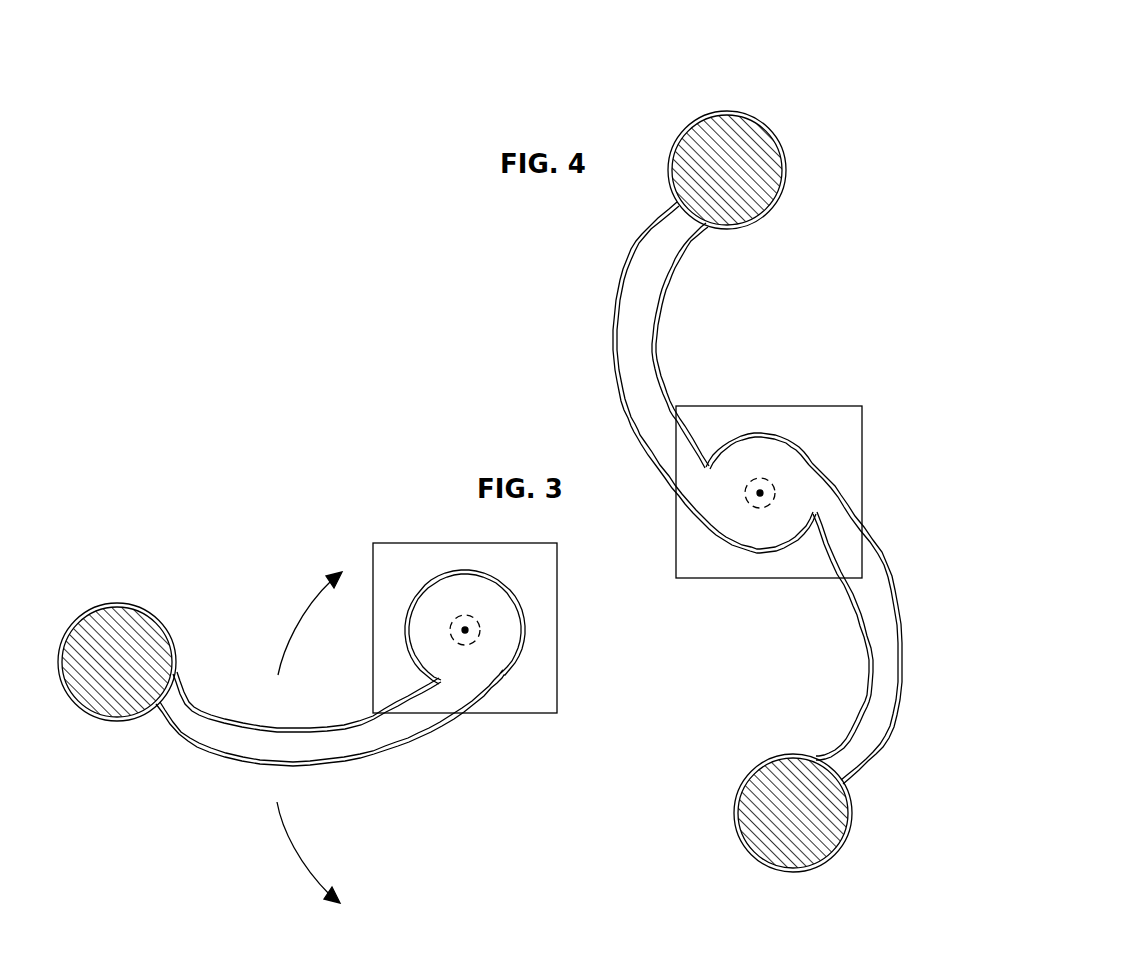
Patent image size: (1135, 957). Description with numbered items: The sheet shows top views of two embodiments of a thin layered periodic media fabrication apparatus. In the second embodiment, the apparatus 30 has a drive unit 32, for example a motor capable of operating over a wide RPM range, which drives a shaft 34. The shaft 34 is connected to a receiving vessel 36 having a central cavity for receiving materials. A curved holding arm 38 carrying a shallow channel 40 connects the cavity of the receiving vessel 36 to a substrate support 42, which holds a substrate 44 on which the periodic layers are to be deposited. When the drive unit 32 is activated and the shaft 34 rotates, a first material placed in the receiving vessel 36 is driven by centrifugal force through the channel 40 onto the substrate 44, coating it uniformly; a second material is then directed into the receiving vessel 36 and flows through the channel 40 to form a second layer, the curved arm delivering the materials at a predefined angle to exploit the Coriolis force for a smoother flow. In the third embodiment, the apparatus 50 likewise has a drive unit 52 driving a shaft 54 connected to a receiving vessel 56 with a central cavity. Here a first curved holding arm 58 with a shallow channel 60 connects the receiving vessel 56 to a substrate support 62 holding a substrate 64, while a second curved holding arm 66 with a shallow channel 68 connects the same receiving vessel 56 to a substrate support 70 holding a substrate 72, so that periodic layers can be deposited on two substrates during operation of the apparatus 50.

In FIG. 3, the apparatus 30 is at (342, 515).
In FIG. 3, the drive unit 32 is at (495, 715).
In FIG. 3, the shaft 34 is at (468, 628).
In FIG. 3, the receiving vessel 36 is at (527, 628).
In FIG. 3, the curved holding arm 38 is at (307, 745).
In FIG. 3, the shallow channel 40 is at (340, 742).
In FIG. 3, the substrate support 42 is at (164, 652).
In FIG. 3, the substrate 44 is at (140, 632).
In FIG. 4, the apparatus 50 is at (832, 227).
In FIG. 4, the drive unit 52 is at (745, 405).
In FIG. 4, the shaft 54 is at (760, 493).
In FIG. 4, the receiving vessel 56 is at (792, 440).
In FIG. 4, the first curved holding arm 58 is at (813, 623).
In FIG. 4, the shallow channel 60 is at (873, 723).
In FIG. 4, the substrate support 62 is at (757, 804).
In FIG. 4, the substrate 64 is at (768, 850).
In FIG. 4, the second curved holding arm 66 is at (660, 342).
In FIG. 4, the shallow channel 68 is at (664, 377).
In FIG. 4, the substrate support 70 is at (771, 131).
In FIG. 4, the substrate 72 is at (747, 197).